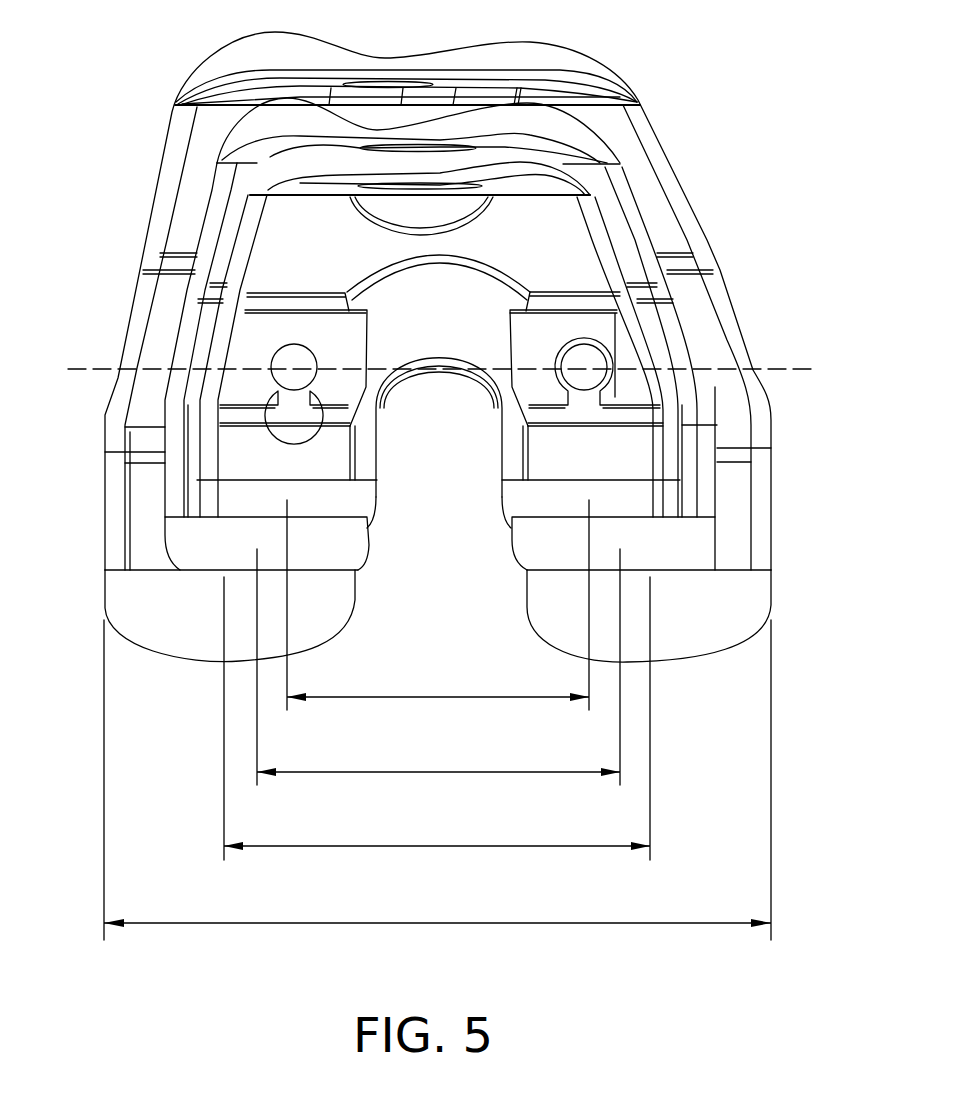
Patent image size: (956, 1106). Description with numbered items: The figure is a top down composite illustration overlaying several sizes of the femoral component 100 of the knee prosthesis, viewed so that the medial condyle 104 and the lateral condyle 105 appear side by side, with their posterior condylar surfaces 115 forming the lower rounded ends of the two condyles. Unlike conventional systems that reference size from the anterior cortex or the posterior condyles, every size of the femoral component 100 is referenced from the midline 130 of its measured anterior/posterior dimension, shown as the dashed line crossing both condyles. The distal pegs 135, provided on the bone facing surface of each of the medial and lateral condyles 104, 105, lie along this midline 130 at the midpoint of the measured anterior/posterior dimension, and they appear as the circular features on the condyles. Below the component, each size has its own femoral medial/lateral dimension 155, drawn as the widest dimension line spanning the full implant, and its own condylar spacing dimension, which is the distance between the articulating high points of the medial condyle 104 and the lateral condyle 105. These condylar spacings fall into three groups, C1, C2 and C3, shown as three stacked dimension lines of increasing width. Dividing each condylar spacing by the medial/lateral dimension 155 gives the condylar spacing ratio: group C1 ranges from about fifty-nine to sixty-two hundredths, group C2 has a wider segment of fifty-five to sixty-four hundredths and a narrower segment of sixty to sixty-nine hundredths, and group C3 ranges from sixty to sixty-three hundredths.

The femoral component 100 is at (433, 288).
The midline 130 is at (90, 369).
The distal pegs 135 is at (600, 352).
The lateral condyle 105 is at (309, 612).
The medial condyle 104 is at (710, 627).
The posterior condylar surface 115 is at (208, 674).
The femoral medial/lateral dimension 155 is at (310, 927).
The condylar spacing dimension group C1 is at (397, 693).
The condylar spacing dimension group C2 is at (397, 768).
The condylar spacing dimension group C3 is at (397, 843).